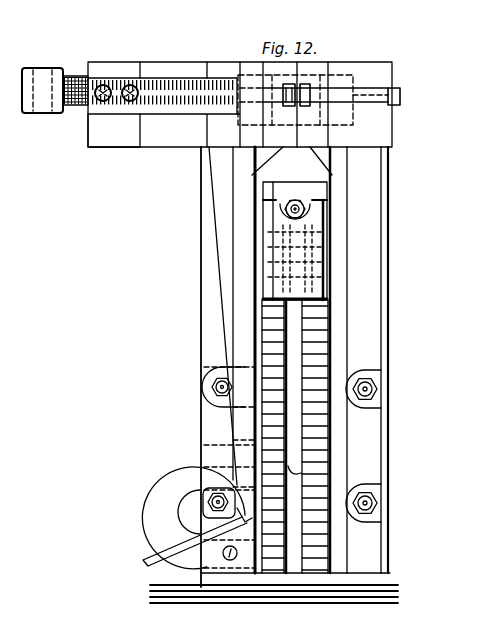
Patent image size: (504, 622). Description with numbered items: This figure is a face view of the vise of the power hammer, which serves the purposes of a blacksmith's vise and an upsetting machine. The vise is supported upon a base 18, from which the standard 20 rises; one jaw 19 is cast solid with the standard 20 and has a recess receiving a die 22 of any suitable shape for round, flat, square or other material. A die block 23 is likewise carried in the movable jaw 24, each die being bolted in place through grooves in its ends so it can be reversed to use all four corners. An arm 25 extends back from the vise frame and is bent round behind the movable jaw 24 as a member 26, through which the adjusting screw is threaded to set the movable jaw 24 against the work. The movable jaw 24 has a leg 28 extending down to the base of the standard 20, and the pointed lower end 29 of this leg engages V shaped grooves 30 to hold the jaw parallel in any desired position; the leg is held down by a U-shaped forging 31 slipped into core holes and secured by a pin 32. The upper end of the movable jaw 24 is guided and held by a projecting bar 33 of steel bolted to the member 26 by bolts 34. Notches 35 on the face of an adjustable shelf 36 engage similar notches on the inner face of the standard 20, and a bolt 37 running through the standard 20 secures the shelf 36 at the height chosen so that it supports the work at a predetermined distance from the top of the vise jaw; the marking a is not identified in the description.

The base 18 is at (370, 574).
The jaw 19 is at (386, 122).
The standard 20 is at (375, 321).
The die 22 is at (306, 148).
The die block 23 is at (287, 113).
The movable jaw 24 is at (258, 121).
The arm 25 is at (143, 138).
The member 26 is at (114, 130).
The leg 28 is at (243, 316).
The pointed lower end 29 is at (237, 486).
The V shaped grooves 30 is at (190, 545).
The U-shaped forging 31 is at (193, 518).
The pin 32 is at (227, 561).
The projecting bar 33 is at (187, 106).
The bolts 34 is at (129, 85).
The notches 35 is at (275, 273).
The adjustable shelf 36 is at (270, 222).
The bolt 37 is at (308, 210).
The chain a is at (278, 382).